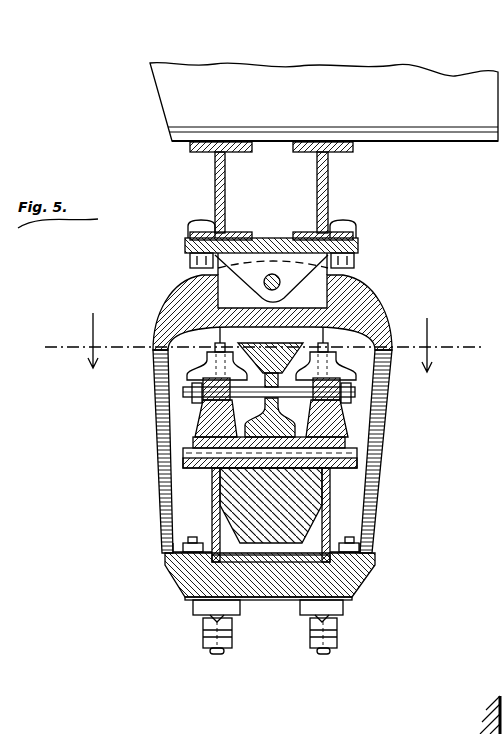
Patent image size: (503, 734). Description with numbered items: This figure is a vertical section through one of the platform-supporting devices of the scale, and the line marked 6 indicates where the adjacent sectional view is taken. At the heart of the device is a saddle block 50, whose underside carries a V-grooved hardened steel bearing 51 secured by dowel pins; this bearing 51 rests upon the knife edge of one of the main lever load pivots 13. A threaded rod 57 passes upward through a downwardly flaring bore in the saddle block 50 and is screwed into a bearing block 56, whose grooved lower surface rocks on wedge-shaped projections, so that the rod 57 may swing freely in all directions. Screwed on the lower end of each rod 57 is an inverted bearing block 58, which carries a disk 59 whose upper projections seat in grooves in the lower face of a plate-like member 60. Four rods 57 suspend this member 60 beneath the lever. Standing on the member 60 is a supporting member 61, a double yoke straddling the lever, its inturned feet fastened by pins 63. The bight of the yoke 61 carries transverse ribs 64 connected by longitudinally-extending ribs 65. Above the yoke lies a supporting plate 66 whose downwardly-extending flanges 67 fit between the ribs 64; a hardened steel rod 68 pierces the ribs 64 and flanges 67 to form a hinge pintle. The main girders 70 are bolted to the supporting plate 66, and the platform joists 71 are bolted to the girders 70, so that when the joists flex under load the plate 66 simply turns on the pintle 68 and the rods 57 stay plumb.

The platform joists 71 is at (170, 110).
The main girders 70 is at (318, 172).
The supporting plate 66 is at (360, 246).
The ribs 64 is at (313, 283).
The flanges 67 is at (247, 273).
The hardened steel rod 68 is at (263, 288).
The longitudinally-extending ribs 65 is at (347, 297).
The supporting member 61 is at (382, 387).
The bearing block 56 is at (338, 370).
The saddle block 50 is at (343, 425).
The V-grooved hardened steel bearing 51 is at (348, 445).
The main lever load pivots 13 is at (327, 463).
The threaded rod 57 is at (322, 522).
The pins 63 is at (373, 557).
The plate-like member 60 is at (197, 582).
The disk 59 is at (340, 608).
The bearing block 58 is at (335, 630).
The section line 6- 6 is at (264, 329).